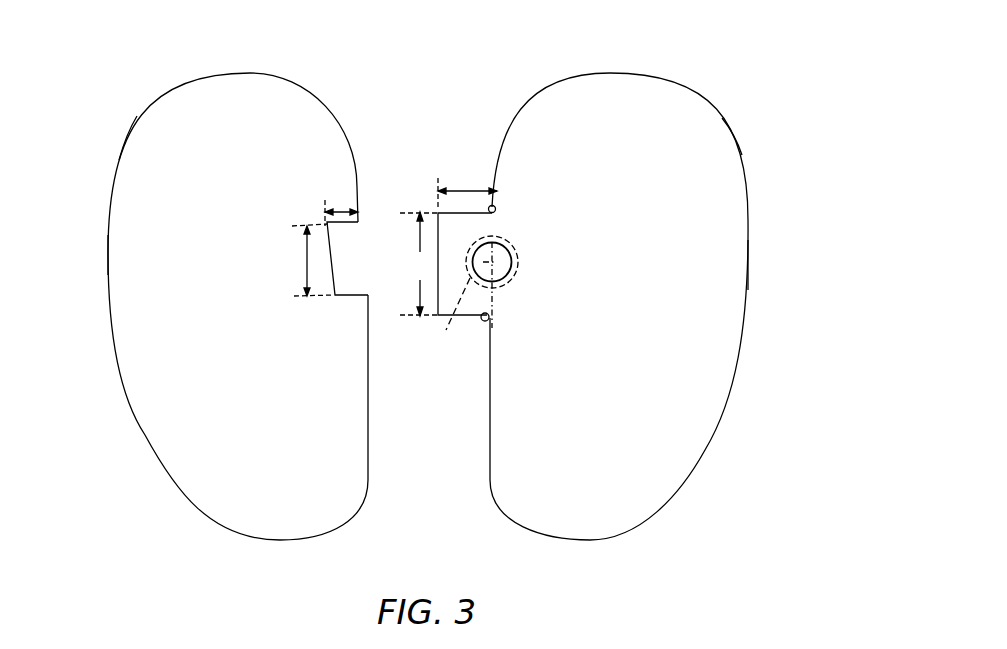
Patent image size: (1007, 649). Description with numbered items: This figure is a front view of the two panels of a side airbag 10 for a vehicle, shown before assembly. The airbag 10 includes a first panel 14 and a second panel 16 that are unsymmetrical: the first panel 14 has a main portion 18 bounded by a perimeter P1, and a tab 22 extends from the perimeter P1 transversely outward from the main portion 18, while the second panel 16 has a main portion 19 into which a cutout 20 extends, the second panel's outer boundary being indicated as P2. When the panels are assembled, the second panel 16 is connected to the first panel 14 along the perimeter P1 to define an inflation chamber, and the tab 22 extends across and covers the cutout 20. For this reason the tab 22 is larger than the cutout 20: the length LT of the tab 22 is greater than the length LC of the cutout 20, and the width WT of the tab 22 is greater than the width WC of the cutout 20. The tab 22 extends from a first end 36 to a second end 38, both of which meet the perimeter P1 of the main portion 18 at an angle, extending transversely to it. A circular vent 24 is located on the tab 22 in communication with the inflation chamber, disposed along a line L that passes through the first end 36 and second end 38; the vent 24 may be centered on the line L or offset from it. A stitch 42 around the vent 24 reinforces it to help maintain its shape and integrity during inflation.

The airbag 10 is at (722, 48).
The first panel 14 is at (710, 352).
The second panel 16 is at (148, 353).
The main portion 18 is at (728, 263).
The main portion 19 is at (130, 250).
The cutout 20 is at (347, 257).
The tab 22 is at (465, 302).
The vent 24 is at (512, 259).
The first end 36 is at (496, 211).
The second end 38 is at (492, 314).
The stitch 42 is at (518, 268).
The perimeter P1 is at (722, 118).
The second panel P2 is at (137, 118).
The width of the cutout WC is at (340, 210).
The length of the cutout LC is at (306, 262).
The width of the tab WT is at (476, 189).
The length of the tab LT is at (419, 264).
The line L is at (443, 334).